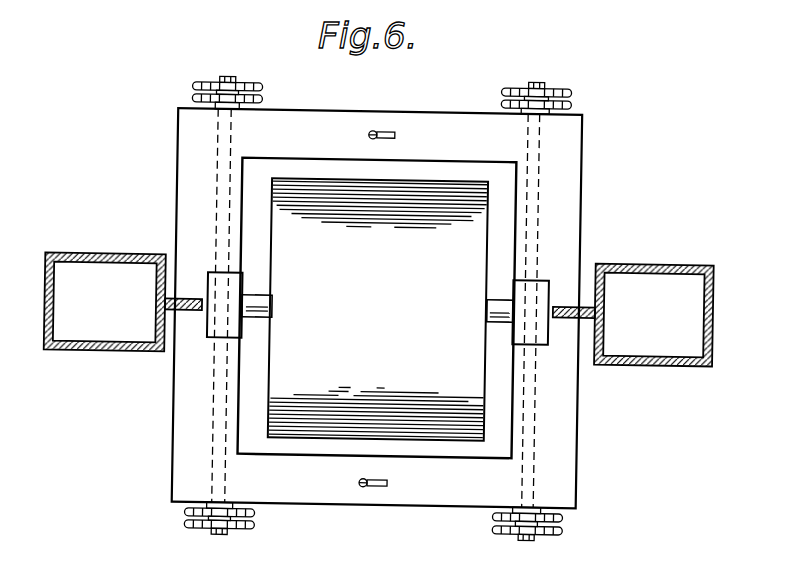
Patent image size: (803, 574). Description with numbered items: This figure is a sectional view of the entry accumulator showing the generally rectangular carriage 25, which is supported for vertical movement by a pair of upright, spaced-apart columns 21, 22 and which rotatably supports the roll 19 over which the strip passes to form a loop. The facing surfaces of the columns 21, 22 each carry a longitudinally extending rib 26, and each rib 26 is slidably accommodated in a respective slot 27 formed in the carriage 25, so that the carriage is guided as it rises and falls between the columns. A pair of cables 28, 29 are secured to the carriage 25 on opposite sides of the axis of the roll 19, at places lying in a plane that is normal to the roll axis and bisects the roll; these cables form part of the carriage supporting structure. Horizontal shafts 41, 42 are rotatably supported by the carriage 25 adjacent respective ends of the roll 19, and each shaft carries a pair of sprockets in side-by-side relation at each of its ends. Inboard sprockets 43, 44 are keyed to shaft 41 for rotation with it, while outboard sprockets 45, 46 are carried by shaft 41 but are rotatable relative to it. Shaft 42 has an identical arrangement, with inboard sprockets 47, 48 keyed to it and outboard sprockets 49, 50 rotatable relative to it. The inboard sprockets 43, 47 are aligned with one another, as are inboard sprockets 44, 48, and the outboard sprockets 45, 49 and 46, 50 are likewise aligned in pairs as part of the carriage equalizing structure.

The roll 19 is at (469, 242).
The column 21 is at (99, 358).
The column 22 is at (664, 358).
The carriage 25 is at (570, 197).
The rib 26 is at (168, 315).
The slot 27 is at (188, 303).
The cable 28 is at (391, 482).
The cable 29 is at (393, 134).
The horizontal shaft 41 is at (538, 173).
The horizontal shaft 42 is at (226, 161).
The inboard sprocket 43 is at (564, 515).
The inboard sprocket 44 is at (564, 97).
The outboard sprocket 45 is at (502, 530).
The outboard sprocket 46 is at (516, 88).
The inboard sprocket 47 is at (189, 514).
The inboard sprocket 48 is at (187, 101).
The outboard sprocket 49 is at (199, 533).
The outboard sprocket 50 is at (258, 88).